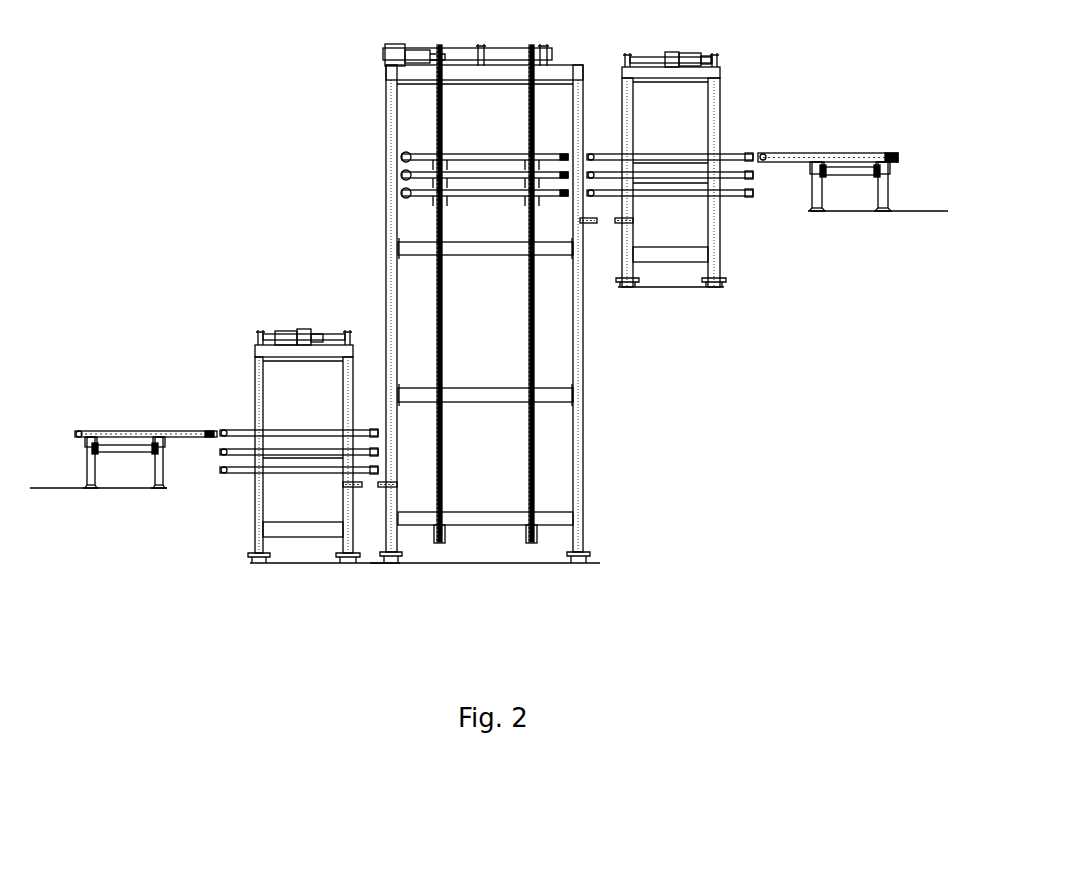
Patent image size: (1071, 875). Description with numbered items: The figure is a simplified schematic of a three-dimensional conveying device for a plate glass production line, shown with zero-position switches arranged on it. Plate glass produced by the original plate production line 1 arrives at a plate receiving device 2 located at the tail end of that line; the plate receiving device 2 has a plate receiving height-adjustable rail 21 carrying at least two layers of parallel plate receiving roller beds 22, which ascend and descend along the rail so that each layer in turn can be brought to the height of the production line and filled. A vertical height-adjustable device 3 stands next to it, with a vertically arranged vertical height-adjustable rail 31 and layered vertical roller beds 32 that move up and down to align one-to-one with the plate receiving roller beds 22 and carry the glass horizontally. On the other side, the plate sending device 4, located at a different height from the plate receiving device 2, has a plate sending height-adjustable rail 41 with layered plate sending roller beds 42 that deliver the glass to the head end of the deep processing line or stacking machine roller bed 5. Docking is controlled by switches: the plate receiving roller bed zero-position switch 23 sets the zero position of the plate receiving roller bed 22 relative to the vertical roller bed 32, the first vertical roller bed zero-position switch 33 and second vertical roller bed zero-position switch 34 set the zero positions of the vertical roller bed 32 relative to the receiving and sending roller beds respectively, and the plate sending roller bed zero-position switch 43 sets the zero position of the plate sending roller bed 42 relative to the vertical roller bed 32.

The original plate production line 1 is at (145, 431).
The plate receiving device 2 is at (307, 462).
The vertical height-adjustable device 3 is at (488, 329).
The plate sending device 4 is at (679, 187).
The deep processing line or stacking machine roller bed 5 is at (835, 153).
The plate receiving height-adjustable rail 21 is at (255, 470).
The plate receiving roller bed 22 is at (285, 473).
The plate receiving roller bed zero-position switch 23 is at (353, 490).
The vertical height-adjustable rail 31 is at (437, 298).
The vertical roller bed 32 is at (408, 198).
The first vertical roller bed zero-position switch 33 is at (385, 490).
The second vertical roller bed zero-position switch 34 is at (590, 225).
The plate sending height-adjustable rail 41 is at (722, 197).
The plate sending roller bed 42 is at (680, 193).
The plate sending roller bed zero-position switch 43 is at (623, 230).